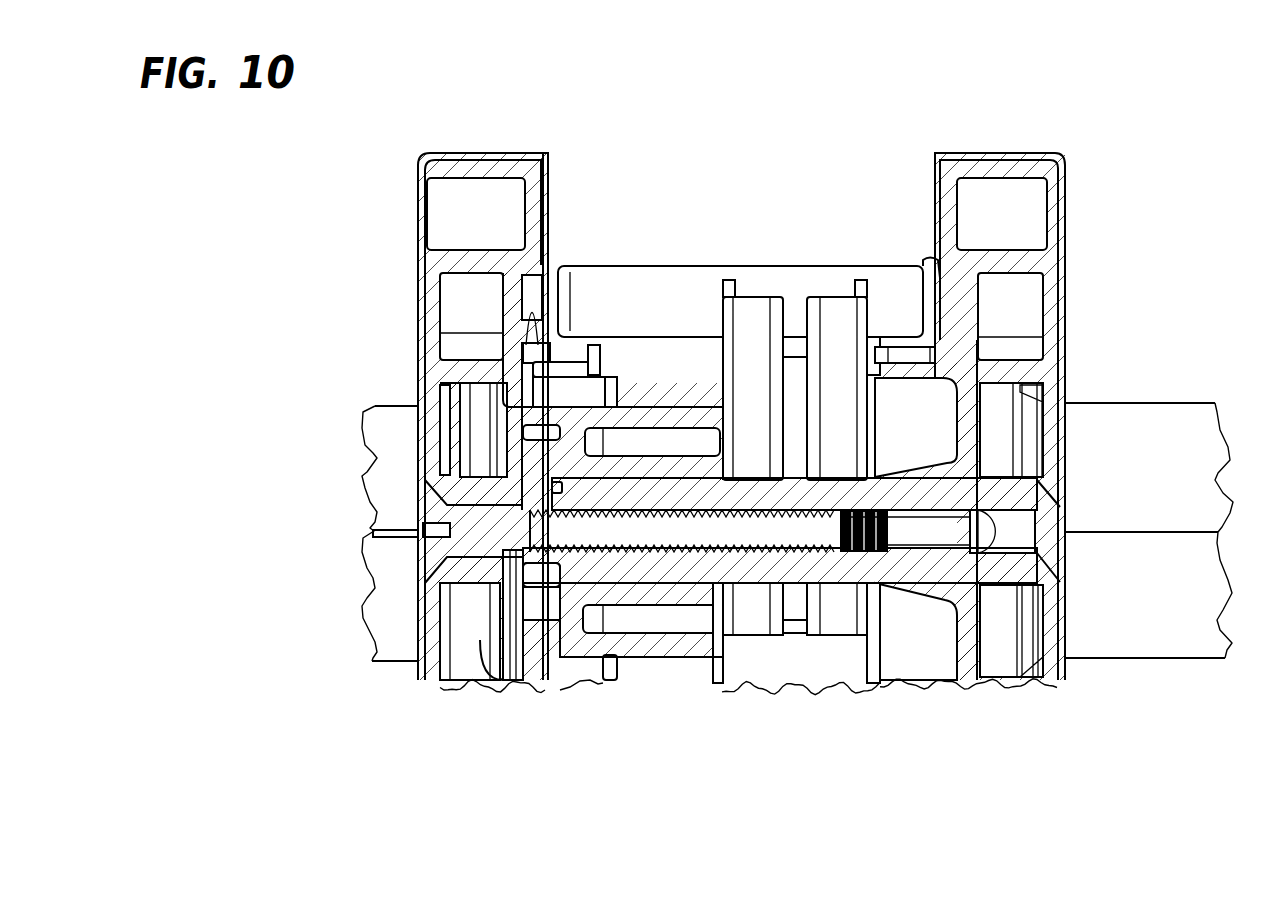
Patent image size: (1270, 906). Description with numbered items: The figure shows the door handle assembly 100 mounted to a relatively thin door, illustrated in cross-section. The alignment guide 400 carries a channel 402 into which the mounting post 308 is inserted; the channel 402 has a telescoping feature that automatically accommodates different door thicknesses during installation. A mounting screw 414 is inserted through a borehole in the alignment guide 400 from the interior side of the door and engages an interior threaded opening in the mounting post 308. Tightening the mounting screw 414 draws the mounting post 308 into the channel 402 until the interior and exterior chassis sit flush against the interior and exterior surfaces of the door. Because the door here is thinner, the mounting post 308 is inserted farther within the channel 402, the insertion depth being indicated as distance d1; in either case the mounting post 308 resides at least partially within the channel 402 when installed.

The door handle assembly 100 is at (793, 452).
The mounting post 308 is at (955, 493).
The alignment guide 400 is at (533, 607).
The channel 402 is at (557, 577).
The mounting screw 414 is at (777, 533).
The distance d1 is at (446, 426).